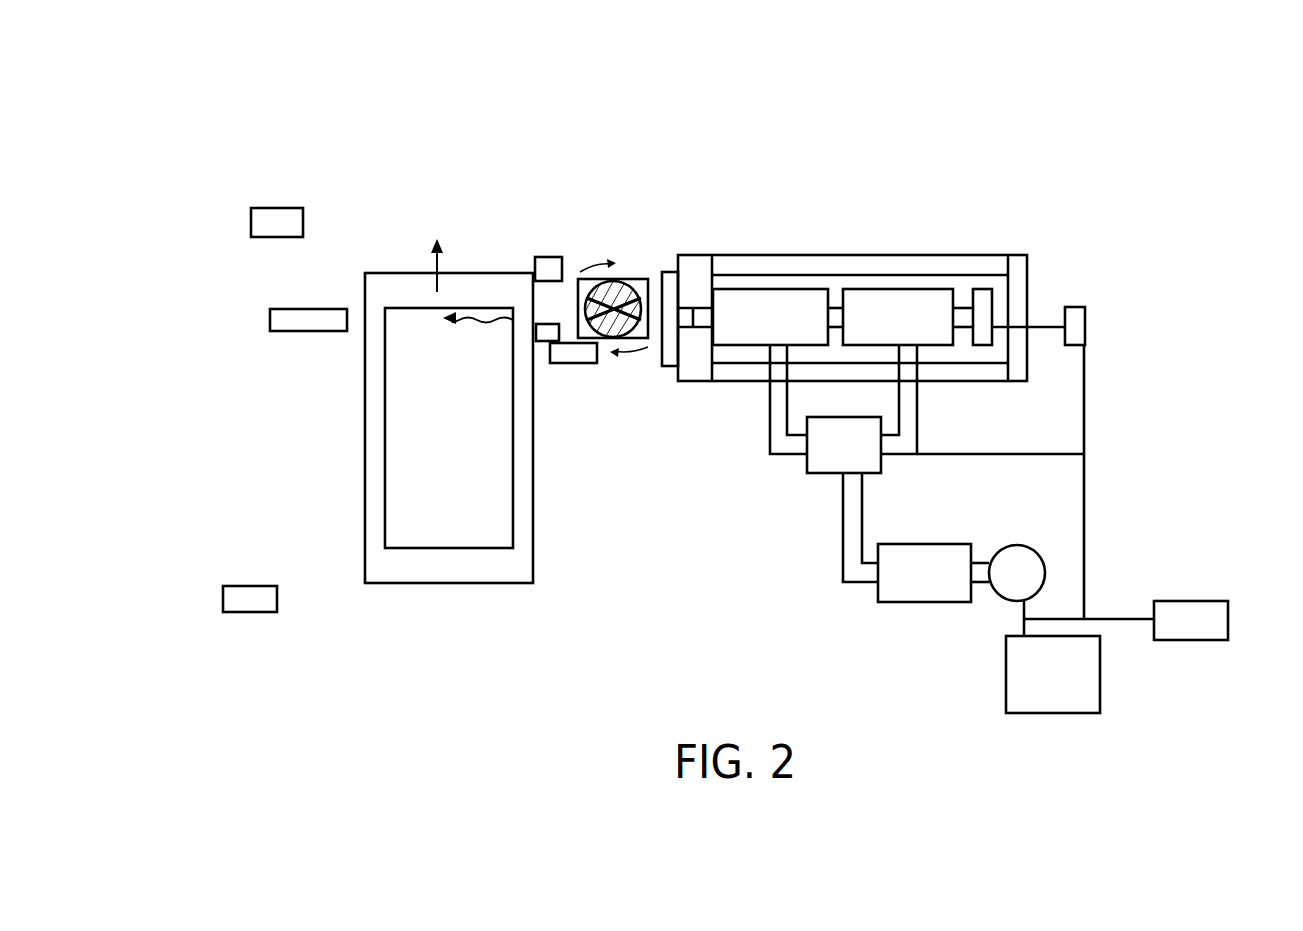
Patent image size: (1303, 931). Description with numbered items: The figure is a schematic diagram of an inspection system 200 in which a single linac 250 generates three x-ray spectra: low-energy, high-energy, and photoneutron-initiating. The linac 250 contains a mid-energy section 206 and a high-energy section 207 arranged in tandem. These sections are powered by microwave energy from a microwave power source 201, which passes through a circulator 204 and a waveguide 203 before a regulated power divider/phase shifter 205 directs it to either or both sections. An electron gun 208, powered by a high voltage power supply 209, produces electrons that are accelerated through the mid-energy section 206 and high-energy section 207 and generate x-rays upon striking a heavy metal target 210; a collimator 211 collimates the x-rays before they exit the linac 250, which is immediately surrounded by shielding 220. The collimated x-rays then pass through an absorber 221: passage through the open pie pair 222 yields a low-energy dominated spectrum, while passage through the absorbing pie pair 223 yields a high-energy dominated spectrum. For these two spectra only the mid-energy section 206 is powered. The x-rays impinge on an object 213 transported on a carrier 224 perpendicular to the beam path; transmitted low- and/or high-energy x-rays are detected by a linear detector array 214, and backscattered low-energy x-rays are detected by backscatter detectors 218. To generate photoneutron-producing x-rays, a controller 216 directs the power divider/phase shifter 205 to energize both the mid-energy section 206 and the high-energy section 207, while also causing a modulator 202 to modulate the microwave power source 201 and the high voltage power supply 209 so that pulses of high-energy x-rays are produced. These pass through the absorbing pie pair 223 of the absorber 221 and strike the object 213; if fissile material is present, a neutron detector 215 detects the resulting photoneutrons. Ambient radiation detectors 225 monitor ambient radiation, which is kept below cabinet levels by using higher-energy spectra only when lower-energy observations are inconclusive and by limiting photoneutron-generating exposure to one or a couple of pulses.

The inspection system 200 is at (1065, 91).
The microwave power source 201 is at (1008, 547).
The modulator 202 is at (1101, 700).
The waveguide 203 is at (770, 402).
The circulator 204 is at (905, 604).
The regulated power divider/phase shifter 205 is at (881, 474).
The mid-energy section 206 is at (883, 288).
The high-energy section 207 is at (760, 288).
The electron gun 208 is at (982, 288).
The high voltage power supply 209 is at (1085, 308).
The heavy metal target 210 is at (703, 317).
The collimator 211 is at (698, 267).
The object 213 is at (460, 548).
The linear detector array 214 is at (277, 308).
The neutron detector 215 is at (592, 365).
The controller 216 is at (1226, 601).
The backscatter detectors 218 is at (548, 257).
The shielding 220 is at (987, 362).
The absorber 221 is at (620, 281).
The open pie pair 222 is at (592, 309).
The absorbing pie pair 223 is at (620, 328).
The carrier 224 is at (535, 570).
The ambient radiation detectors 225 is at (252, 219).
The linac 250 is at (980, 240).